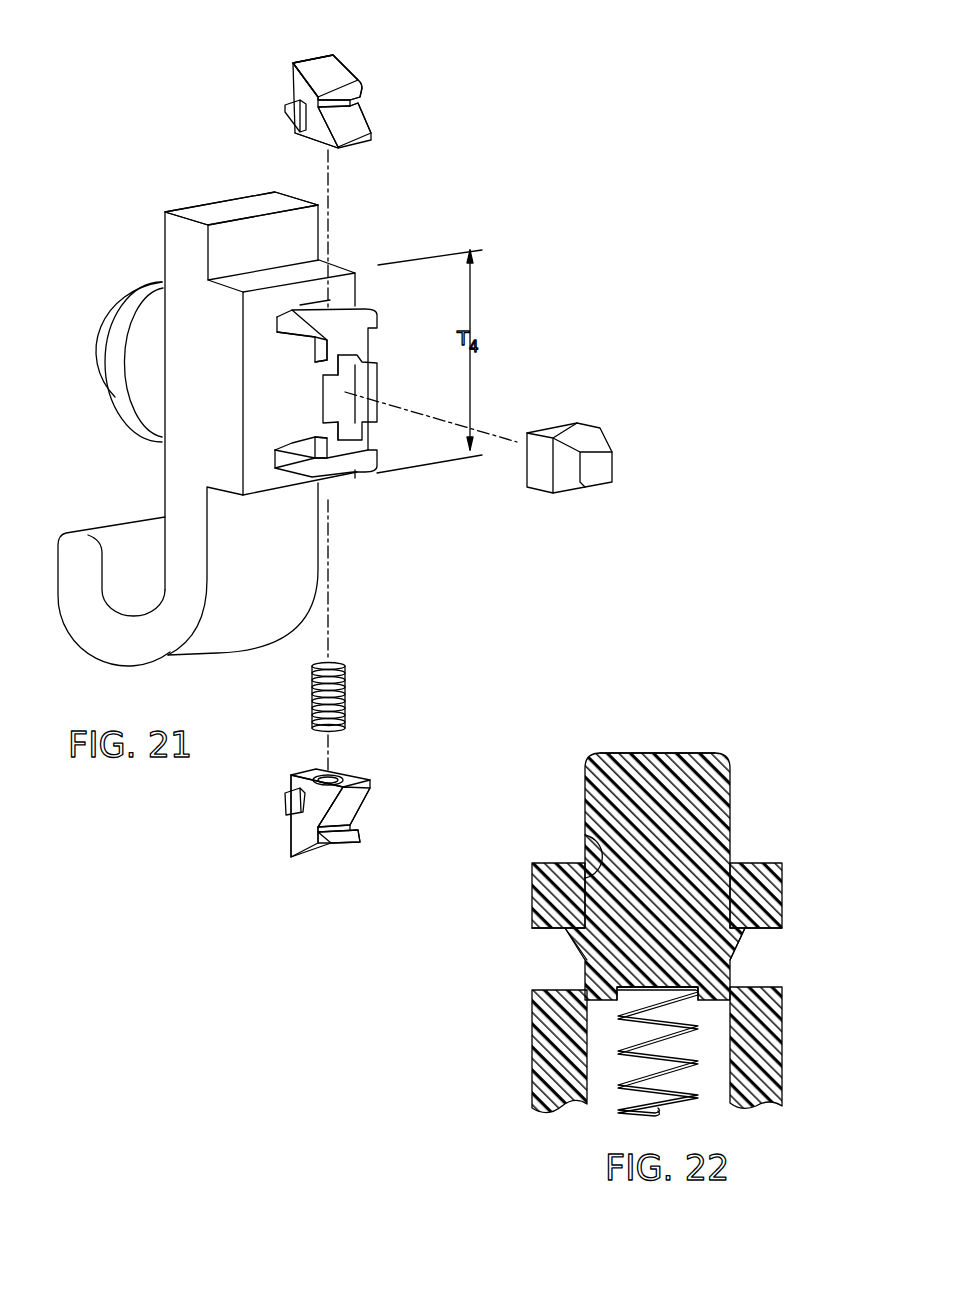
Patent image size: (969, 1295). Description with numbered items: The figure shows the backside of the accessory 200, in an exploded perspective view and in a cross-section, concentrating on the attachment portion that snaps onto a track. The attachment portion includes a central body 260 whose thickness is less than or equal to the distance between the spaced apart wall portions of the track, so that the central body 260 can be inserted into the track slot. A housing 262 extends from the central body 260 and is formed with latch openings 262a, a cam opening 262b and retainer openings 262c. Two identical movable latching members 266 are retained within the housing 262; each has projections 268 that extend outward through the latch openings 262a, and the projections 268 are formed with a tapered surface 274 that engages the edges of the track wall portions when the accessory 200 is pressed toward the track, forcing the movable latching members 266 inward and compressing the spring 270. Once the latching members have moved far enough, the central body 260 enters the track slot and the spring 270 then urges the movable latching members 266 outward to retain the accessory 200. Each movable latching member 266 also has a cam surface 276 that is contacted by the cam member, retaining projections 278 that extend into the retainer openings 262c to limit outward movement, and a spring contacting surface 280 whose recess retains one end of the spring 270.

In FIG. 21, the accessory 200 is at (172, 152).
In FIG. 21, the central body 260 is at (345, 292).
In FIG. 21, the housing 262 is at (367, 323).
In FIG. 22, the housing 262 is at (757, 880).
In FIG. 21, the latch openings 262a is at (305, 308).
In FIG. 22, the latch openings 262a is at (588, 838).
In FIG. 21, the cam opening 262b is at (368, 388).
In FIG. 21, the retainer openings 262c is at (290, 340).
In FIG. 22, the retainer openings 262c is at (547, 930).
In FIG. 21, the movable latching members 266 is at (293, 83).
In FIG. 22, the movable latching members 266 is at (713, 778).
In FIG. 21, the projections 268 is at (318, 63).
In FIG. 22, the projections 268 is at (660, 782).
In FIG. 21, the spring 270 is at (337, 663).
In FIG. 22, the spring 270 is at (625, 1082).
In FIG. 21, the tapered surface 274 is at (333, 77).
In FIG. 21, the cam surface 276 is at (347, 122).
In FIG. 21, the retaining projections 278 is at (288, 118).
In FIG. 22, the retaining projections 278 is at (582, 940).
In FIG. 21, the spring contacting surface 280 is at (337, 777).
In FIG. 22, the spring contacting surface 280 is at (640, 990).